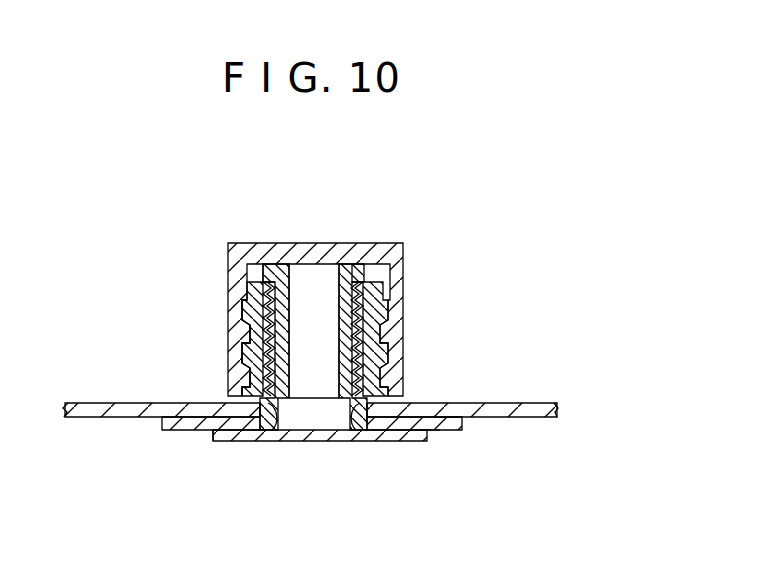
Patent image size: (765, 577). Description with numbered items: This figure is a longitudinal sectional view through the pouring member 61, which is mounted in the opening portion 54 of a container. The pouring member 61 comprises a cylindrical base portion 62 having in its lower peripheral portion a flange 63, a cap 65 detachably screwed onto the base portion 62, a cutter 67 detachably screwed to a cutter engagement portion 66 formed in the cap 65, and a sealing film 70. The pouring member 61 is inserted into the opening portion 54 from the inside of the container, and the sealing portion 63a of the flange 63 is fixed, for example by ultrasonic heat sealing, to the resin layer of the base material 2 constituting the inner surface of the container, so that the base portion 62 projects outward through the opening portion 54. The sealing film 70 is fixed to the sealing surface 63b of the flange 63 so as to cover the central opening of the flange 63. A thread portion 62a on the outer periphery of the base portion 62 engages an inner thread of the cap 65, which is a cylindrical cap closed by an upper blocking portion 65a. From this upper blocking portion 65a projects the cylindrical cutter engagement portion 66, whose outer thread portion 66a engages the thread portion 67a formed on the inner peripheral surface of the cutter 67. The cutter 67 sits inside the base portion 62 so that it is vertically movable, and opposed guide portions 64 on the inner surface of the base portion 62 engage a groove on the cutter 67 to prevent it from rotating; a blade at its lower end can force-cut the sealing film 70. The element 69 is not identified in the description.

The base material 2 is at (85, 412).
The opening portion 54 is at (226, 400).
The pouring member 61 is at (482, 229).
The base portion 62 is at (392, 371).
The thread portion 62a is at (394, 340).
The flange 63 is at (355, 460).
The sealing portion 63a is at (448, 430).
The sealing surface 63b is at (433, 436).
The guide portions 64 is at (267, 432).
The cap 65 is at (275, 291).
The upper blocking portion 65a is at (240, 312).
The cutter engagement portion 66 is at (303, 300).
The thread portion 66a is at (378, 275).
The cutter 67 is at (263, 288).
The thread portion 67a is at (290, 292).
The base plate 69 is at (350, 421).
The sealing film 70 is at (222, 442).